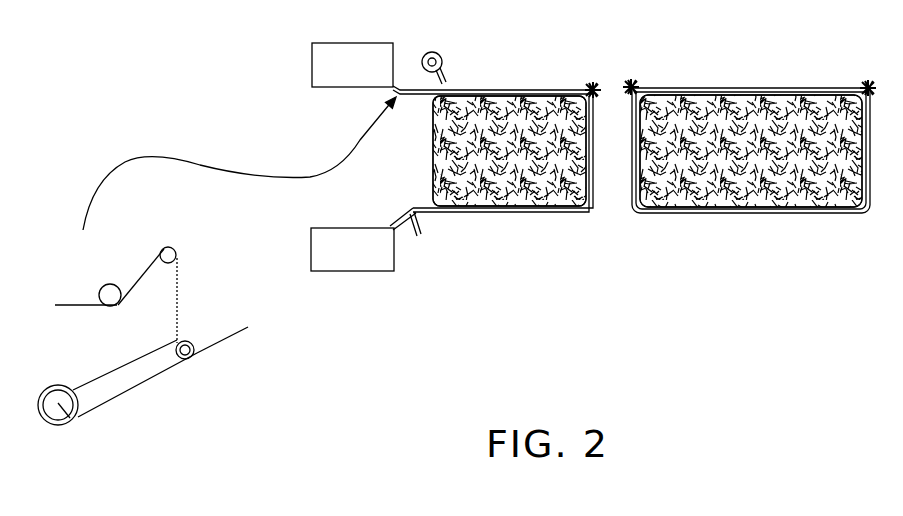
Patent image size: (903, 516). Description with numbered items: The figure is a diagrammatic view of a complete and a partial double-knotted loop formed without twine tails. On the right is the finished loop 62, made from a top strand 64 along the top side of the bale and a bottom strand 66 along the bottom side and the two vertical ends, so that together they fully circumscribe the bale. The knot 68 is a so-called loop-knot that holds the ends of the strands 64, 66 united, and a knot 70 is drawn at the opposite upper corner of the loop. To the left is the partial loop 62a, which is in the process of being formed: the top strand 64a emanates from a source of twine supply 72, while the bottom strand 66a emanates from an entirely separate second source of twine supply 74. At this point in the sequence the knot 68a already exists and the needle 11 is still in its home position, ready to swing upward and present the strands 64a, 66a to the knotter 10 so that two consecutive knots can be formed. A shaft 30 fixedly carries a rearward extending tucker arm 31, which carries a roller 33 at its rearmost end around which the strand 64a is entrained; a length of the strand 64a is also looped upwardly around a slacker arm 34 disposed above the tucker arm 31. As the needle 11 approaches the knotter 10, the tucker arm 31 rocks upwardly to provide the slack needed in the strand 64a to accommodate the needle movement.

The knotter 10 is at (440, 52).
The needle 11 is at (423, 224).
The shaft 30 is at (65, 427).
The tucker arm 31 is at (140, 380).
The roller 33 is at (192, 342).
The slacker arm 34 is at (176, 248).
The loop 62 is at (749, 149).
The partial loop 62a is at (399, 203).
The top strand 64 is at (715, 92).
The top strand 64a is at (458, 88).
The bottom strand 66 is at (745, 214).
The bottom strand 66a is at (500, 214).
The knot 68 is at (862, 84).
The knot 68a is at (590, 86).
The knot 70 is at (638, 82).
The source of twine supply 72 is at (345, 42).
The second source of twine supply 74 is at (345, 228).